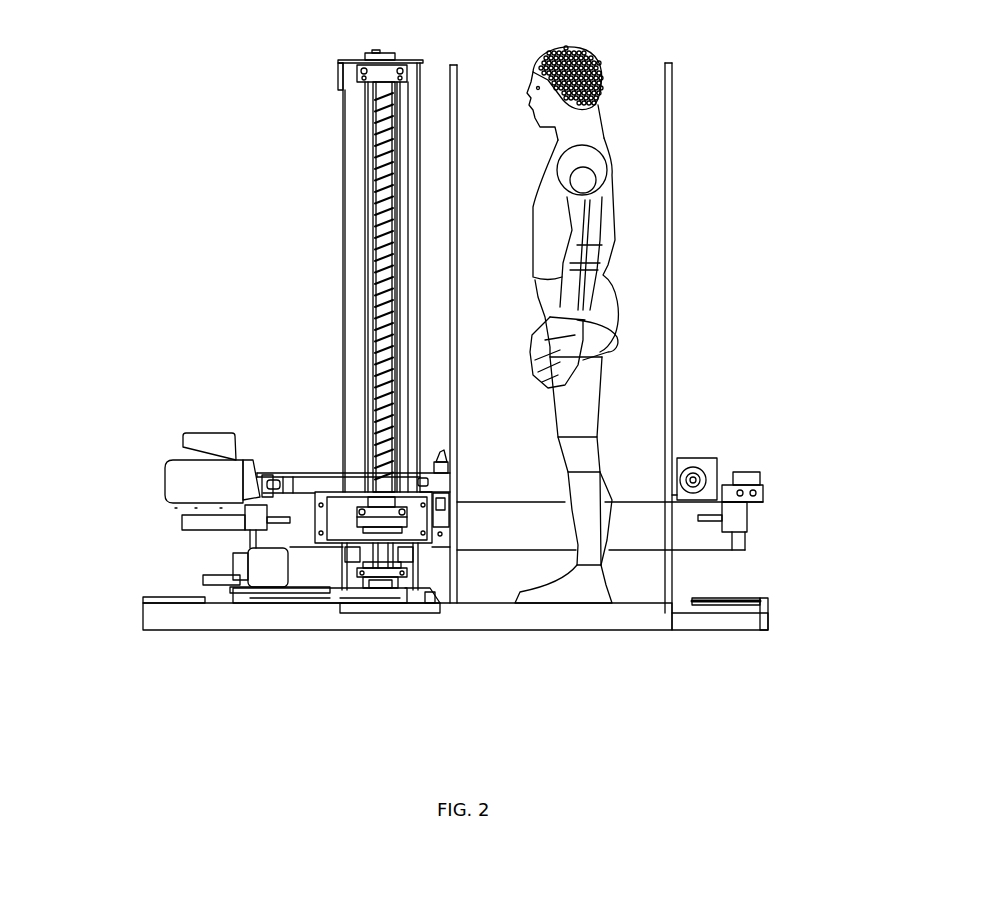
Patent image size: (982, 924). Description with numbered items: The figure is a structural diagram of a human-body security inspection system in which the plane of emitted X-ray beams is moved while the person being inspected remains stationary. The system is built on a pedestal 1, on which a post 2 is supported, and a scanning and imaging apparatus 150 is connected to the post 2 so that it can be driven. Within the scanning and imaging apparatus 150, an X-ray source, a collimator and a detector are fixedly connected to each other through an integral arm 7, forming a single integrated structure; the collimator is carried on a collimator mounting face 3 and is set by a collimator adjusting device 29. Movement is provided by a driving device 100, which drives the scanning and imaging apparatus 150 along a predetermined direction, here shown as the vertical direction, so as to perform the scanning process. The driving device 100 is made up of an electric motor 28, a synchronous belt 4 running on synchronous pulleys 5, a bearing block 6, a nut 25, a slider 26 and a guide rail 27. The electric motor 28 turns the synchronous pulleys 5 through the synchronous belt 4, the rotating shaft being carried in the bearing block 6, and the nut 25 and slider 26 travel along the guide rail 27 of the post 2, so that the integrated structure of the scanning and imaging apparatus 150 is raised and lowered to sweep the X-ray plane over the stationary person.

The driving device 100 is at (168, 252).
The pedestal 1 is at (167, 617).
The post 2 is at (357, 158).
The collimator mounting face 3 is at (380, 262).
The guide rail 27 is at (405, 125).
The synchronous belt 4 is at (312, 593).
The synchronous pulleys 5 is at (382, 585).
The bearing block 6 is at (387, 588).
The integral arm 7 is at (497, 528).
The nut 25 is at (425, 493).
The slider 26 is at (343, 512).
The electric motor 28 is at (170, 462).
The collimator adjusting device 29 is at (441, 456).
The scanning and imaging apparatus 150 is at (754, 530).